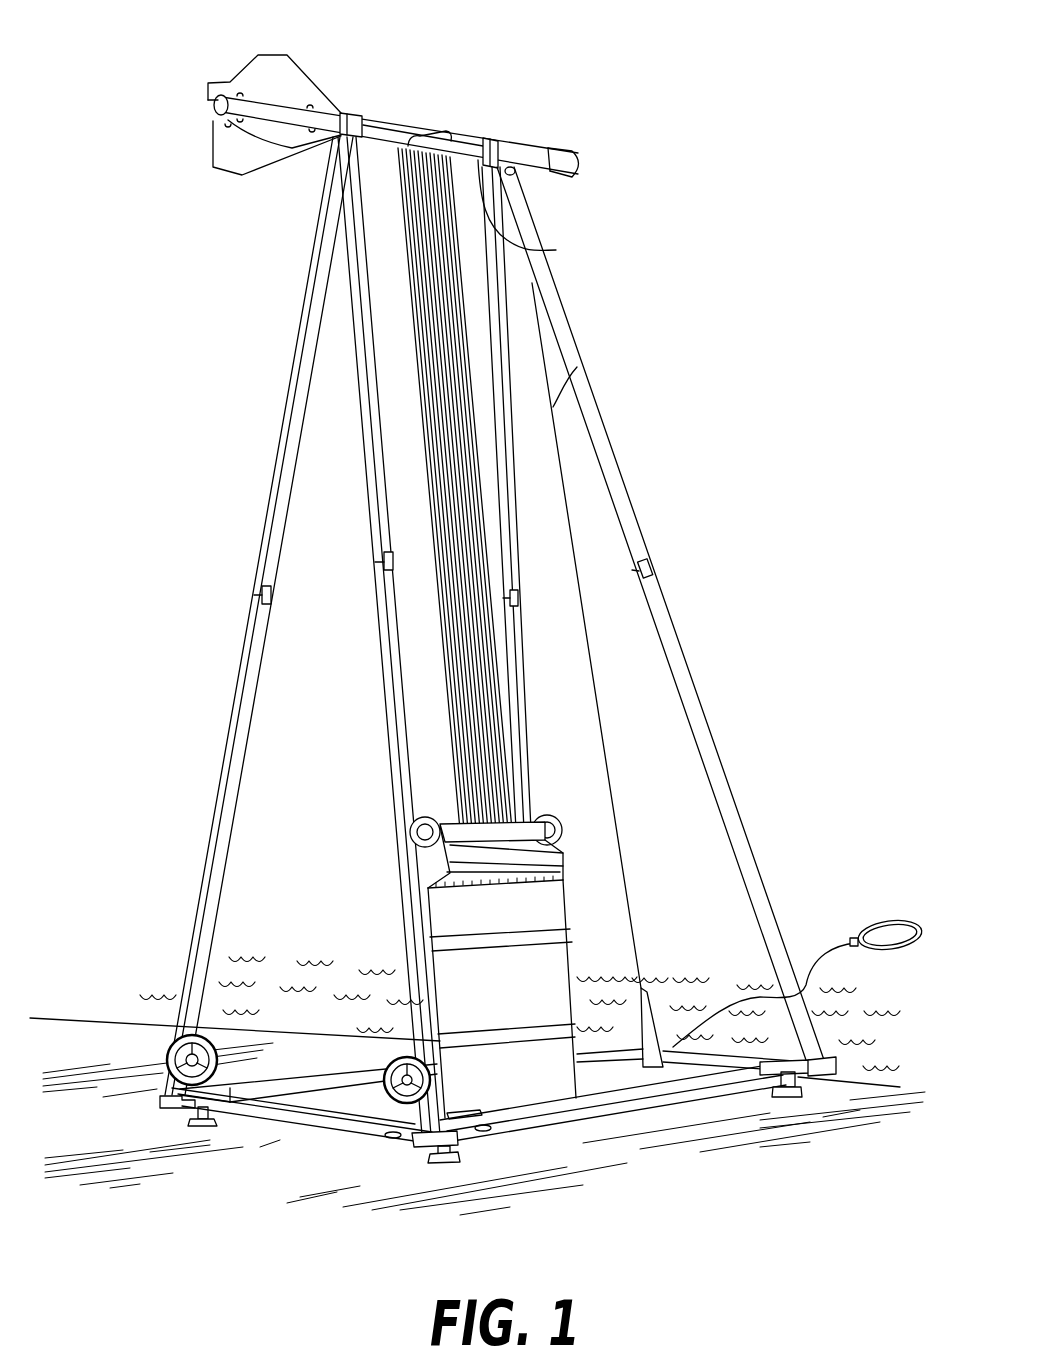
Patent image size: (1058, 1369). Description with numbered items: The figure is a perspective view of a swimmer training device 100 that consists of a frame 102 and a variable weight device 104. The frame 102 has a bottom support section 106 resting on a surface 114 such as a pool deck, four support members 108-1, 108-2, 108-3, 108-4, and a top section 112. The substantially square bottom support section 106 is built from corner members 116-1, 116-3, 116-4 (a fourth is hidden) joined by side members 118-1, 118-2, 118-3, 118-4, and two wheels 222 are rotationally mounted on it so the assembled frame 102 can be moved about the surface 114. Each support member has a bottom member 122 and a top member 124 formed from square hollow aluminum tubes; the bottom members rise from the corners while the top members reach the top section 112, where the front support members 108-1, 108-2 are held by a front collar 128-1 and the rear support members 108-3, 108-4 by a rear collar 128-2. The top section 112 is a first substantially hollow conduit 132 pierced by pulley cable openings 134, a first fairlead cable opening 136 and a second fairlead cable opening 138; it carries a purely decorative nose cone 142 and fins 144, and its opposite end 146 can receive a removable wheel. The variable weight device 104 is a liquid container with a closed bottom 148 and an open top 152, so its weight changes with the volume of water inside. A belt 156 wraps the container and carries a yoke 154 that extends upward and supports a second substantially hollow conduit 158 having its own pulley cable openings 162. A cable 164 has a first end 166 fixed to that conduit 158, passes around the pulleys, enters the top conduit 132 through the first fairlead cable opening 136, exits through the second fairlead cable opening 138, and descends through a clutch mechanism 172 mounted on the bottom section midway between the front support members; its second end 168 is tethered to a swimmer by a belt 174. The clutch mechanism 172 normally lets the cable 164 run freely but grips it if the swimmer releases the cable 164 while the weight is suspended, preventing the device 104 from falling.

The swimmer training device 100 is at (727, 84).
The frame 102 is at (216, 522).
The variable weight device 104 is at (567, 768).
The bottom support section 106 is at (481, 1092).
The support member 108-1 is at (664, 578).
The support member 108-2 is at (522, 605).
The support member 108-3 is at (243, 632).
The support member 108-4 is at (376, 612).
The top section 112 is at (478, 133).
The surface 114 is at (212, 1213).
The corner member 116-1 is at (838, 1080).
The corner member 116-3 is at (160, 1100).
The corner member 116-4 is at (442, 1155).
The side member 118-1 is at (718, 1050).
The side member 118-2 is at (318, 1078).
The side member 118-3 is at (332, 1138).
The side member 118-4 is at (582, 1110).
The bottom member 122 is at (220, 775).
The top member 124 is at (290, 385).
The front collar 128-1 is at (500, 160).
The rear collar 128-2 is at (348, 110).
The first substantially hollow conduit 132 is at (404, 122).
The pulley cable openings 134 is at (420, 146).
The first fairlead cable opening 136 is at (537, 211).
The second fairlead cable opening 138 is at (516, 176).
The nose cone 142 is at (590, 160).
The fins 144 is at (255, 62).
The end 146 is at (216, 108).
The closed bottom 148 is at (463, 1110).
The open top 152 is at (560, 856).
The yoke 154 is at (422, 805).
The belt 156 is at (555, 889).
The second substantially hollow conduit 158 is at (446, 848).
The pulley cable openings 162 is at (503, 850).
The cable 164 is at (420, 378).
The first end 166 is at (465, 812).
The second end 168 is at (852, 938).
The clutch mechanism 172 is at (650, 1013).
The belt 174 is at (882, 922).
The wheel 222 is at (172, 1046).